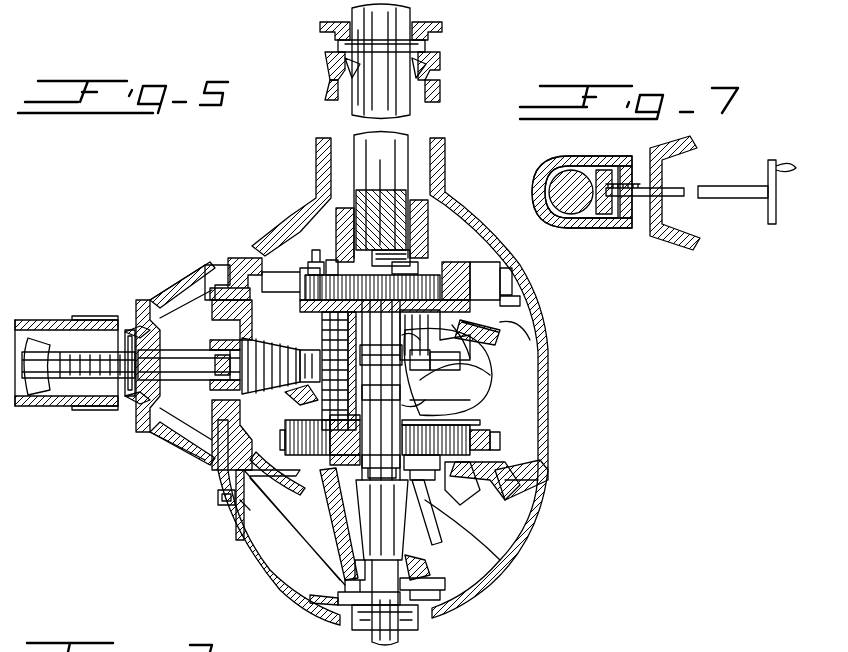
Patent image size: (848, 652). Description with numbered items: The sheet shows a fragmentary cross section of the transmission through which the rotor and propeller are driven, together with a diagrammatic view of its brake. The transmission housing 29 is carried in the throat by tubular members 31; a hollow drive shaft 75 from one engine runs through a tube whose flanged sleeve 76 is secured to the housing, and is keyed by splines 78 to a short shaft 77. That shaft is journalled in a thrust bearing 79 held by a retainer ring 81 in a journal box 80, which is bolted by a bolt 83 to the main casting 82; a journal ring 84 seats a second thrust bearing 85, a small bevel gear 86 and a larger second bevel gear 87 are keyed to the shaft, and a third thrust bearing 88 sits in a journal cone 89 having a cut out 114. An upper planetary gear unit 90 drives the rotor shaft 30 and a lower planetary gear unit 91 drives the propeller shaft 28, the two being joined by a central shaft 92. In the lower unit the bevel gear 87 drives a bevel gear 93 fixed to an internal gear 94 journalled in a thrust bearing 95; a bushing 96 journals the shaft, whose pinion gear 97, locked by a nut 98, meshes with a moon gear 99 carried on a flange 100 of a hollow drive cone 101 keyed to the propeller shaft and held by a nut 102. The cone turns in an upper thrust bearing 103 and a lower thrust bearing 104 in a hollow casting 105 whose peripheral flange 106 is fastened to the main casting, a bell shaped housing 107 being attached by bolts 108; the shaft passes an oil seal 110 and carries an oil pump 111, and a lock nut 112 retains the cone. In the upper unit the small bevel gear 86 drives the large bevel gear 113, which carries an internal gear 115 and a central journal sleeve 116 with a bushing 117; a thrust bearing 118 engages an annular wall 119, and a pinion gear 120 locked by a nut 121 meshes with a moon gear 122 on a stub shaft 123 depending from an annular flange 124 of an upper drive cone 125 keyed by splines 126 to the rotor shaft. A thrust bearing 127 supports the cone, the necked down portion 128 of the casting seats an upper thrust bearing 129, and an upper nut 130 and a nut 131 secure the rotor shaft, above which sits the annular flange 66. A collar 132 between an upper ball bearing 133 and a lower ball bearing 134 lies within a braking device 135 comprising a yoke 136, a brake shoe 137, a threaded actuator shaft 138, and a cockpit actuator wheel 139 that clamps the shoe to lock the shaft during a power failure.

In FIG. 5, the shaft 28 is at (400, 628).
In FIG. 5, the transmission housing 29 is at (558, 372).
In FIG. 5, the shaft 30 is at (398, 22).
In FIG. 5, the tubular member 31 is at (62, 320).
In FIG. 5, the annular flange 66 is at (443, 26).
In FIG. 5, the drive shaft 75 is at (38, 385).
In FIG. 5, the flanged sleeve 76 is at (108, 320).
In FIG. 5, the short shaft 77 is at (188, 358).
In FIG. 5, the splines 78 is at (86, 352).
In FIG. 5, the thrust bearing 79 is at (168, 400).
In FIG. 5, the journal box 80 is at (144, 302).
In FIG. 5, the retainer ring 81 is at (128, 330).
In FIG. 5, the main casting 82 is at (283, 242).
In FIG. 5, the bolt 83 is at (205, 270).
In FIG. 5, the journal ring 84 is at (238, 260).
In FIG. 5, the thrust bearing 85 is at (222, 388).
In FIG. 5, the small bevel gear 86 is at (262, 394).
In FIG. 5, the second bevel gear 87 is at (330, 328).
In FIG. 5, the thrust bearing 88 is at (305, 402).
In FIG. 5, the journal cone 89 is at (258, 438).
In FIG. 5, the upper planetary gear unit 90 is at (458, 296).
In FIG. 5, the lower planetary gear unit 91 is at (484, 452).
In FIG. 5, the shaft 92 is at (381, 396).
In FIG. 7, the shaft 92 is at (568, 205).
In FIG. 5, the bevel gear 93 is at (468, 382).
In FIG. 5, the internal gear 94 is at (484, 430).
In FIG. 5, the thrust bearing 95 is at (496, 434).
In FIG. 5, the bushing 96 is at (362, 425).
In FIG. 5, the pinion gear 97 is at (304, 466).
In FIG. 5, the nut 98 is at (362, 462).
In FIG. 5, the moon gear 99 is at (472, 478).
In FIG. 5, the flange 100 is at (466, 488).
In FIG. 5, the hollow drive cone 101 is at (358, 520).
In FIG. 5, the nut 102 is at (425, 470).
In FIG. 5, the upper thrust bearing 103 is at (432, 514).
In FIG. 5, the lower thrust bearing 104 is at (424, 562).
In FIG. 5, the hollow casting 105 is at (285, 484).
In FIG. 5, the peripheral flange 106 is at (540, 472).
In FIG. 5, the bell shaped housing 107 is at (520, 548).
In FIG. 5, the bolts 108 is at (232, 498).
In FIG. 5, the oil seal 110 is at (362, 625).
In FIG. 5, the oil pump 111 is at (335, 592).
In FIG. 5, the lock nut 112 is at (428, 586).
In FIG. 5, the bevel gear 113 is at (515, 330).
In FIG. 5, the cut out 114 is at (445, 360).
In FIG. 5, the internal gear 115 is at (505, 280).
In FIG. 5, the central journal sleeve 116 is at (410, 320).
In FIG. 5, the bushing 117 is at (366, 318).
In FIG. 5, the thrust bearing 118 is at (512, 300).
In FIG. 5, the annular wall 119 is at (268, 278).
In FIG. 5, the pinion gear 120 is at (446, 282).
In FIG. 5, the nut 121 is at (420, 268).
In FIG. 5, the moon gear 122 is at (310, 280).
In FIG. 5, the stub shaft 123 is at (322, 262).
In FIG. 5, the annular flange 124 is at (470, 268).
In FIG. 5, the upper drive cone 125 is at (410, 195).
In FIG. 5, the splines 126 is at (428, 215).
In FIG. 5, the thrust bearing 127 is at (428, 228).
In FIG. 5, the necked down portion 128 is at (440, 95).
In FIG. 5, the upper thrust bearing 129 is at (440, 75).
In FIG. 5, the upper nut 130 is at (420, 50).
In FIG. 5, the nut 131 is at (412, 258).
In FIG. 5, the collar 132 is at (381, 355).
In FIG. 5, the upper ball bearing 133 is at (486, 330).
In FIG. 5, the lower ball bearing 134 is at (433, 358).
In FIG. 5, the braking device 135 is at (470, 368).
In FIG. 7, the braking device 135 is at (579, 160).
In FIG. 7, the yoke 136 is at (588, 230).
In FIG. 7, the brake shoe 137 is at (604, 168).
In FIG. 7, the threaded actuator shaft 138 is at (692, 186).
In FIG. 7, the actuator wheel 139 is at (774, 160).